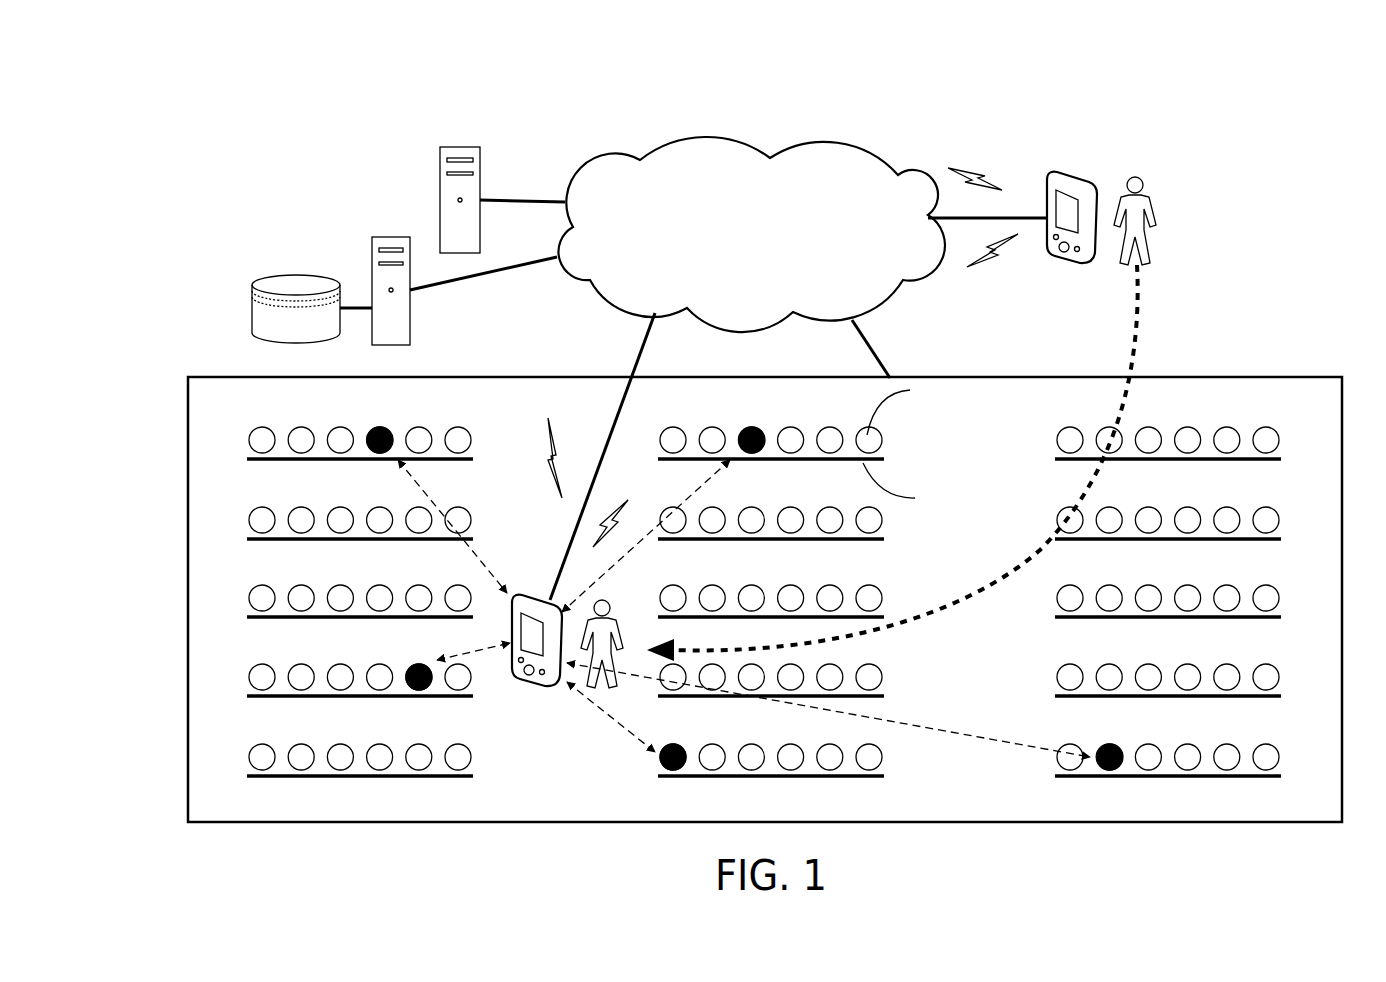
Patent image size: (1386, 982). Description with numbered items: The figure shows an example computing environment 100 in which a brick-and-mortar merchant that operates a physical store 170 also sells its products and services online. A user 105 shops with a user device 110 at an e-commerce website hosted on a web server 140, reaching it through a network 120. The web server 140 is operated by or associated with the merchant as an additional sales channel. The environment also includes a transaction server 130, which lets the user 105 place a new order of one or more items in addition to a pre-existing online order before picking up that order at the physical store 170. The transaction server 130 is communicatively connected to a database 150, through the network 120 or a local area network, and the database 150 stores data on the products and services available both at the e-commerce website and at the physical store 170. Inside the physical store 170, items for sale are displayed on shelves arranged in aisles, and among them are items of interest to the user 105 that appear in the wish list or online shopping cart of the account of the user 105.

The computing environment 100 is at (307, 96).
The user 105 is at (1143, 175).
The user device 110 is at (1060, 172).
The network 120 is at (730, 136).
The transaction server 130 is at (390, 237).
The web server 140 is at (457, 143).
The database 150 is at (314, 275).
The physical store 170 is at (1175, 377).